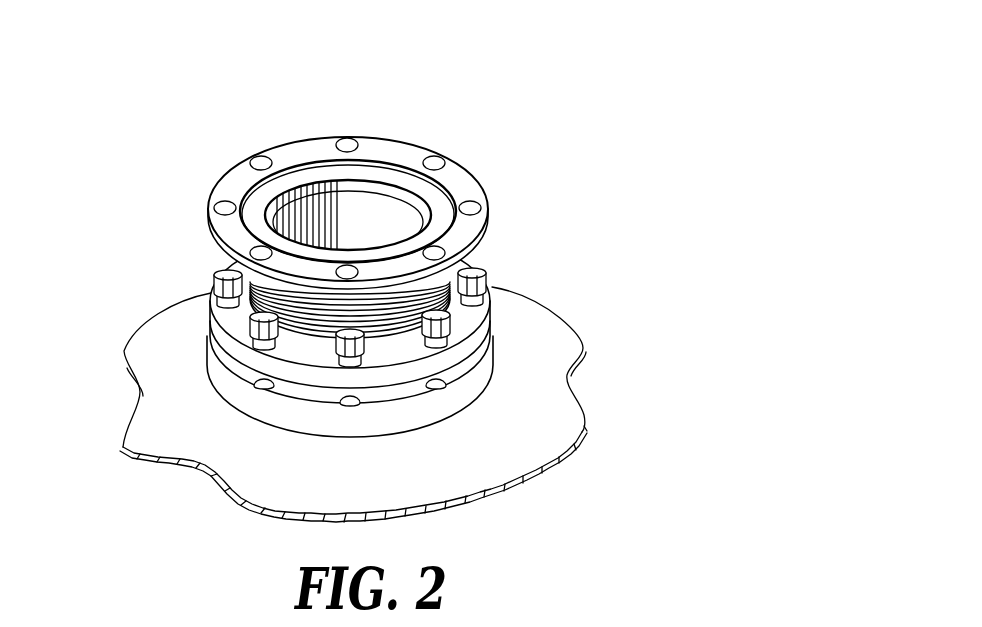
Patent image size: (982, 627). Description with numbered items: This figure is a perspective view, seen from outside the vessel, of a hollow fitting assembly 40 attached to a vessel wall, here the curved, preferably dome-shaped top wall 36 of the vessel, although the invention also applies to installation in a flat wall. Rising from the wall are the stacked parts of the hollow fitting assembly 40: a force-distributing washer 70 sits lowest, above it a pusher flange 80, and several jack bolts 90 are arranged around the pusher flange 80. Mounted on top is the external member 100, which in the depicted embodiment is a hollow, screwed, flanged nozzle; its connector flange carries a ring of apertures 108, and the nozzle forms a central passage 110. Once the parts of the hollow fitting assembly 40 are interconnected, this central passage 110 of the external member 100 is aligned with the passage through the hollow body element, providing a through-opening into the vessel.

The top wall 36 is at (582, 400).
The hollow fitting assembly 40 is at (339, 292).
The force-distributing washer 70 is at (247, 407).
The pusher flange 80 is at (233, 353).
The jack bolts 90 is at (470, 273).
The external member 100 is at (422, 205).
The apertures 108 is at (437, 162).
The central passage 110 is at (318, 210).